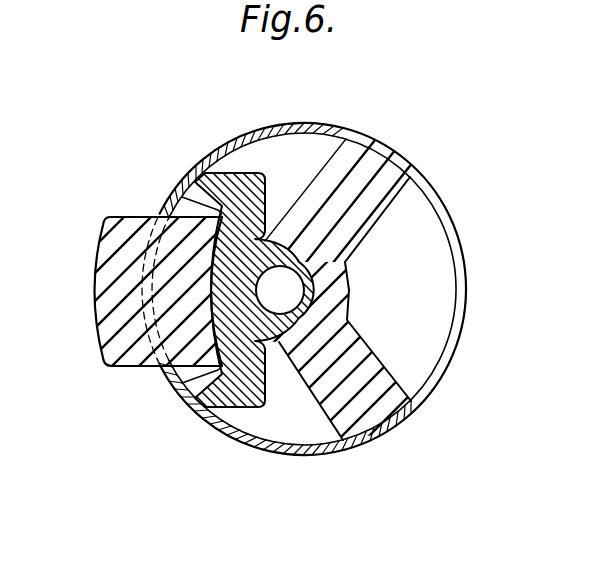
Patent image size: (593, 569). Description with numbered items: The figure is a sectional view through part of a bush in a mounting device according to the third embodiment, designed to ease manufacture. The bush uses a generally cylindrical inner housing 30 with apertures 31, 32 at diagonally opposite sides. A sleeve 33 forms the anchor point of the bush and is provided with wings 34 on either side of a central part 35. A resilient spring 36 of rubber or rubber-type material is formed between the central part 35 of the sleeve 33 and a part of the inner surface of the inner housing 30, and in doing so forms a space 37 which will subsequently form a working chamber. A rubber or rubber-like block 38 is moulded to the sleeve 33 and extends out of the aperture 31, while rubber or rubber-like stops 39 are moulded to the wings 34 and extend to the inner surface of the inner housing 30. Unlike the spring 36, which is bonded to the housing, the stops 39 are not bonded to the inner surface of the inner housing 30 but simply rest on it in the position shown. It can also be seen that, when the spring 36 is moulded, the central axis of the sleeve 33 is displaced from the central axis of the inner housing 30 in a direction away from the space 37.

The inner housing 30 is at (223, 146).
The aperture 31 is at (161, 216).
The aperture 32 is at (456, 245).
The sleeve 33 is at (222, 262).
The wings 34 is at (220, 204).
The central part 35 is at (301, 316).
The resilient spring 36 is at (377, 157).
The space 37 is at (416, 303).
The block 38 is at (112, 335).
The stops 39 is at (233, 177).